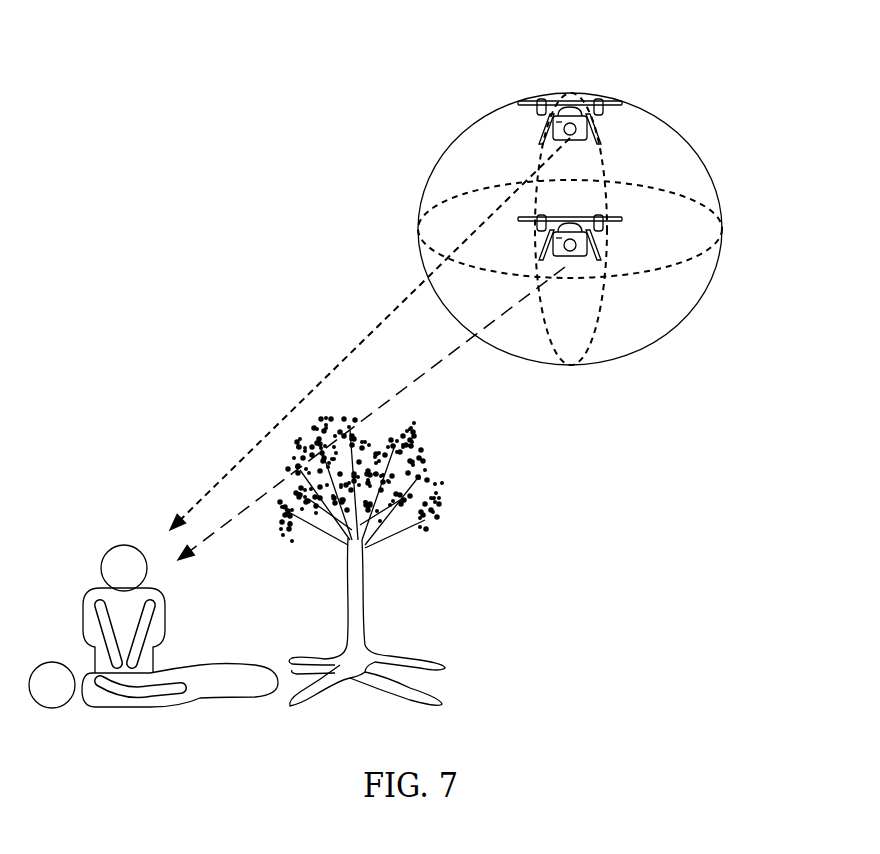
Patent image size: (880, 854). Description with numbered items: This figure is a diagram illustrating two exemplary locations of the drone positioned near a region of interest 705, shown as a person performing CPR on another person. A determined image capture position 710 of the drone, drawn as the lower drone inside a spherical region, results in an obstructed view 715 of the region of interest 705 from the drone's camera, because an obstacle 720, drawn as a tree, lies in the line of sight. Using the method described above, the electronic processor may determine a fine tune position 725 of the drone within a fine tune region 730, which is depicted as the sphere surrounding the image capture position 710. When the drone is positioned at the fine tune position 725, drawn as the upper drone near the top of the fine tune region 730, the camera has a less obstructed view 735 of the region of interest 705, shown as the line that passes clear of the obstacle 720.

The region of interest 705 is at (108, 551).
The image capture position 710 is at (600, 250).
The obstructed view 715 is at (437, 364).
The obstacle 720 is at (427, 525).
The fine tune position 725 is at (531, 100).
The fine tune region 730 is at (649, 114).
The less obstructed view 735 is at (305, 397).